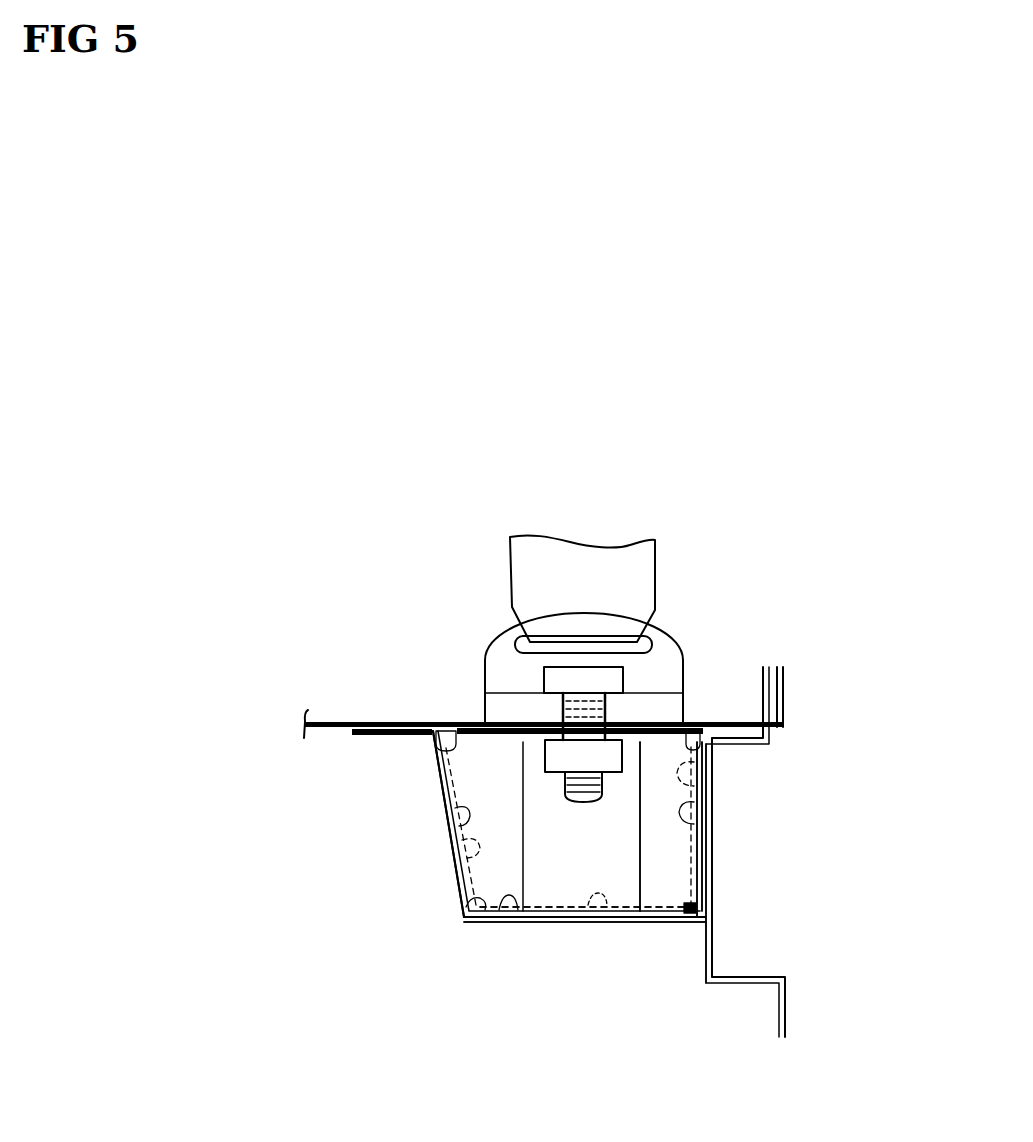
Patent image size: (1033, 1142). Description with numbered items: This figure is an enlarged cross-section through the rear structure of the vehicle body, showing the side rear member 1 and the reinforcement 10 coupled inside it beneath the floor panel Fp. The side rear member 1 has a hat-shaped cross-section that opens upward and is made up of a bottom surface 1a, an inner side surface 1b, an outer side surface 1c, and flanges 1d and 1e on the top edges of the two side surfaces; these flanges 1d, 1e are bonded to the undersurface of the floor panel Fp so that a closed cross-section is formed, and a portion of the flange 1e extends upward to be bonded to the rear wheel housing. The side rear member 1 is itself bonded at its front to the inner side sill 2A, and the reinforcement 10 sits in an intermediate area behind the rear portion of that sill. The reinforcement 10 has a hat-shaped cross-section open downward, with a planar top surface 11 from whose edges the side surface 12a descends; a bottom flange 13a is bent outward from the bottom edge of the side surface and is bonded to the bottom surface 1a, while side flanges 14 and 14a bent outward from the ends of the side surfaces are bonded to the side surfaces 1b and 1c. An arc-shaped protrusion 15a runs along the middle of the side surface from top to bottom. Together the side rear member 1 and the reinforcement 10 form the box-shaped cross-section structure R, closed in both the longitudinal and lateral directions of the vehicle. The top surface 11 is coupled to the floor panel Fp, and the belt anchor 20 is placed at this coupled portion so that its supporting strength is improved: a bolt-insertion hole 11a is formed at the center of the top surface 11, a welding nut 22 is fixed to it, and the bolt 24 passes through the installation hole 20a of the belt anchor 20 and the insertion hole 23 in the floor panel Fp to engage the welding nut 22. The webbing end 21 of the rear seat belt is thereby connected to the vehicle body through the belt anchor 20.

The floor panel Fp is at (341, 722).
The side rear member 1 is at (452, 898).
The bottom surface 1a is at (509, 914).
The inner side surface 1b is at (443, 824).
The outer side surface 1c is at (710, 823).
The flange 1d is at (377, 737).
The flange 1e is at (747, 745).
The inner side sill 2A is at (705, 978).
The reinforcement 10 is at (708, 893).
The top surface 11 is at (464, 722).
The bolt-insertion hole 11a is at (573, 742).
The side surface 12a is at (648, 873).
The bottom flange 13a is at (597, 907).
The side flange 14 is at (708, 782).
The side flange 14a is at (460, 857).
The protrusion 15a is at (558, 870).
The belt anchor 20 is at (672, 634).
The installation hole 20a is at (590, 697).
The webbing end 21 is at (657, 551).
The welding nut 22 is at (620, 772).
The insertion hole 23 is at (567, 706).
The bolt 24 is at (584, 667).
The box-shaped cross-section structure R is at (505, 868).